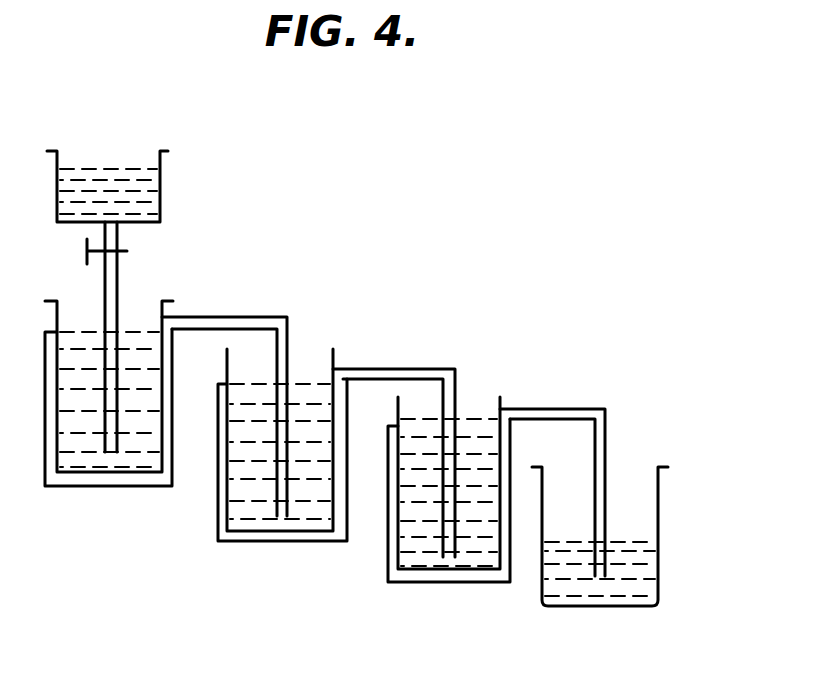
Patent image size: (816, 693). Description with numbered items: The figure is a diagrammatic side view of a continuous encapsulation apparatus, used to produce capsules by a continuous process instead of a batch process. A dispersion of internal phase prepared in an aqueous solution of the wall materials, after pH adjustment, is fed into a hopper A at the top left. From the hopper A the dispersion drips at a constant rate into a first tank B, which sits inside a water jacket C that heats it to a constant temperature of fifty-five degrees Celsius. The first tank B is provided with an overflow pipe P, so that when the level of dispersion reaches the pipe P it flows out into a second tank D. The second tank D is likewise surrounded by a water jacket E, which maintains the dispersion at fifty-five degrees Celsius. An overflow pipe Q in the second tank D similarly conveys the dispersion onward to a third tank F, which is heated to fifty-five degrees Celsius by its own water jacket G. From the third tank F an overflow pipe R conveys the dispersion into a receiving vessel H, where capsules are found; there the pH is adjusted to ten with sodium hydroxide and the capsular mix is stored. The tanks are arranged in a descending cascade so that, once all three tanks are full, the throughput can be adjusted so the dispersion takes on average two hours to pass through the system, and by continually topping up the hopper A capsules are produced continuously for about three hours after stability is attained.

The hopper A is at (107, 186).
The first tank B is at (132, 459).
The water jacket C is at (97, 487).
The second tank D is at (325, 511).
The water jacket E is at (289, 535).
The third tank F is at (487, 556).
The water jacket G is at (461, 578).
The receiving vessel H is at (622, 596).
The overflow pipe P is at (220, 317).
The overflow pipe Q is at (388, 369).
The overflow pipe R is at (560, 409).